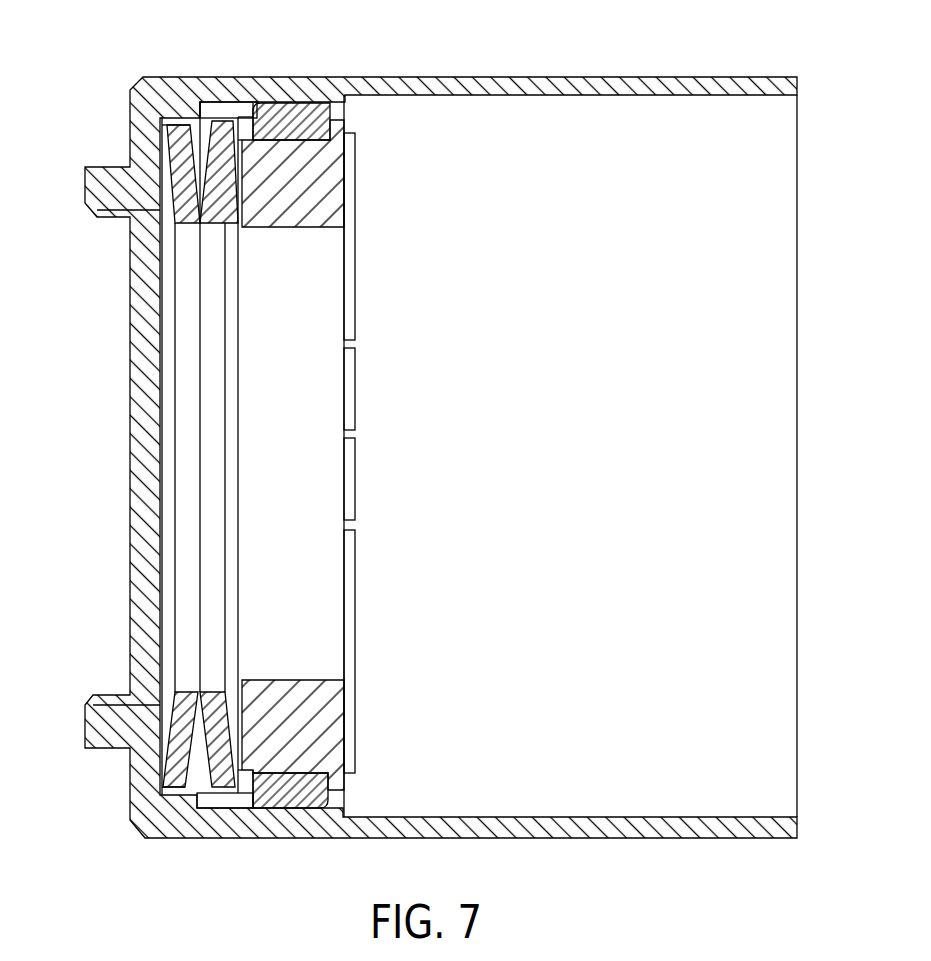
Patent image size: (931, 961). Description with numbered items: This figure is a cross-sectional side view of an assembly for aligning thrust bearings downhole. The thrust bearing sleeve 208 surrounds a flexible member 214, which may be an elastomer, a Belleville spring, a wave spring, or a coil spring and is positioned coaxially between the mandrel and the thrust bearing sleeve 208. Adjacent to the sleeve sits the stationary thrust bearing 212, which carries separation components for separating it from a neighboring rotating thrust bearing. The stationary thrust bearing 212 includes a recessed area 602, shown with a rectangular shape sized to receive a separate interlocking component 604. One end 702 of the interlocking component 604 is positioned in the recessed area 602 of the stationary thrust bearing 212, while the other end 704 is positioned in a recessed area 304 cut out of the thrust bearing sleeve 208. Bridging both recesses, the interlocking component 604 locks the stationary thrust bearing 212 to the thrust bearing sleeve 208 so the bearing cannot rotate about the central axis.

The thrust bearing sleeve 208 is at (94, 165).
The stationary thrust bearing 212 is at (326, 743).
The flexible member 214 is at (176, 291).
The recessed area 304 is at (308, 102).
The recessed area 602 is at (344, 134).
The interlocking component 604 is at (287, 113).
The one end of the interlocking component 702 is at (256, 112).
The other end of the interlocking component 704 is at (256, 108).